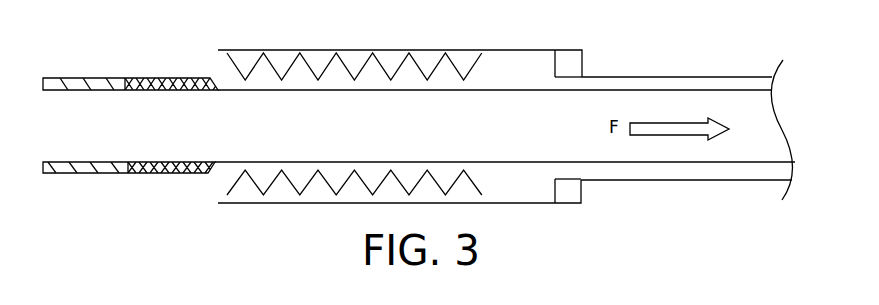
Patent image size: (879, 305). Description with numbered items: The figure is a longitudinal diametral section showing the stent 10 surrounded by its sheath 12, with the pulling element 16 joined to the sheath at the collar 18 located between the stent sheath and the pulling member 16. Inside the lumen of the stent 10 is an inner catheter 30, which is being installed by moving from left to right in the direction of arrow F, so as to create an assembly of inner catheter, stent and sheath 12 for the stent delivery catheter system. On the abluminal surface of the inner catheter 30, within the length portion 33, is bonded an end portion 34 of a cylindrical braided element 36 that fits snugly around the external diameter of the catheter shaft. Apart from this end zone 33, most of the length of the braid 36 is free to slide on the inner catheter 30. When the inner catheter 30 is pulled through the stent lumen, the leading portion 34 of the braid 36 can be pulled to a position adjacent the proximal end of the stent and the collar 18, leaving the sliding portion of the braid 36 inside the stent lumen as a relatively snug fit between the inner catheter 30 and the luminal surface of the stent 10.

The stent 10 is at (363, 66).
The sheath 12 is at (514, 50).
The pulling element 16 is at (711, 77).
The collar 18 is at (566, 50).
The inner catheter 30 is at (510, 92).
The length portion 33 is at (125, 95).
The end portion 34 is at (170, 78).
The cylindrical braided element 36 is at (87, 78).